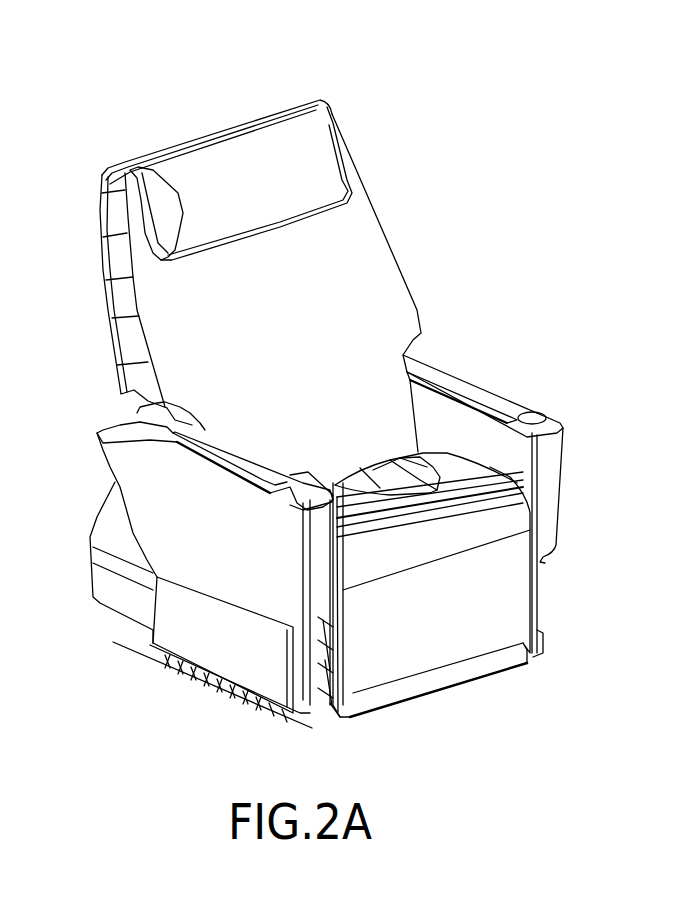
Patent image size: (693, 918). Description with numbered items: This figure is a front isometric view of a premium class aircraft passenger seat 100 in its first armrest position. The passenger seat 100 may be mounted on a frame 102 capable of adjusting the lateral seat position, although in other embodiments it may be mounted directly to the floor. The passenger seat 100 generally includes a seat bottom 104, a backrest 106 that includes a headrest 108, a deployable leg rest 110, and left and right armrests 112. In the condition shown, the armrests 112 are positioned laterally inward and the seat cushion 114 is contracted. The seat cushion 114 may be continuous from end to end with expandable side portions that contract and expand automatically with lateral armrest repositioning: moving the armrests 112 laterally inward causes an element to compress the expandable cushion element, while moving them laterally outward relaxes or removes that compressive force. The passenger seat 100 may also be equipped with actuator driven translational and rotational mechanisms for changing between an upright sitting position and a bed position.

The passenger seat 100 is at (316, 60).
The frame 102 is at (193, 677).
The seat bottom 104 is at (453, 483).
The backrest 106 is at (390, 272).
The headrest 108 is at (323, 158).
The deployable leg rest 110 is at (525, 613).
The armrests 112 is at (445, 376).
The seat cushion 114 is at (378, 516).